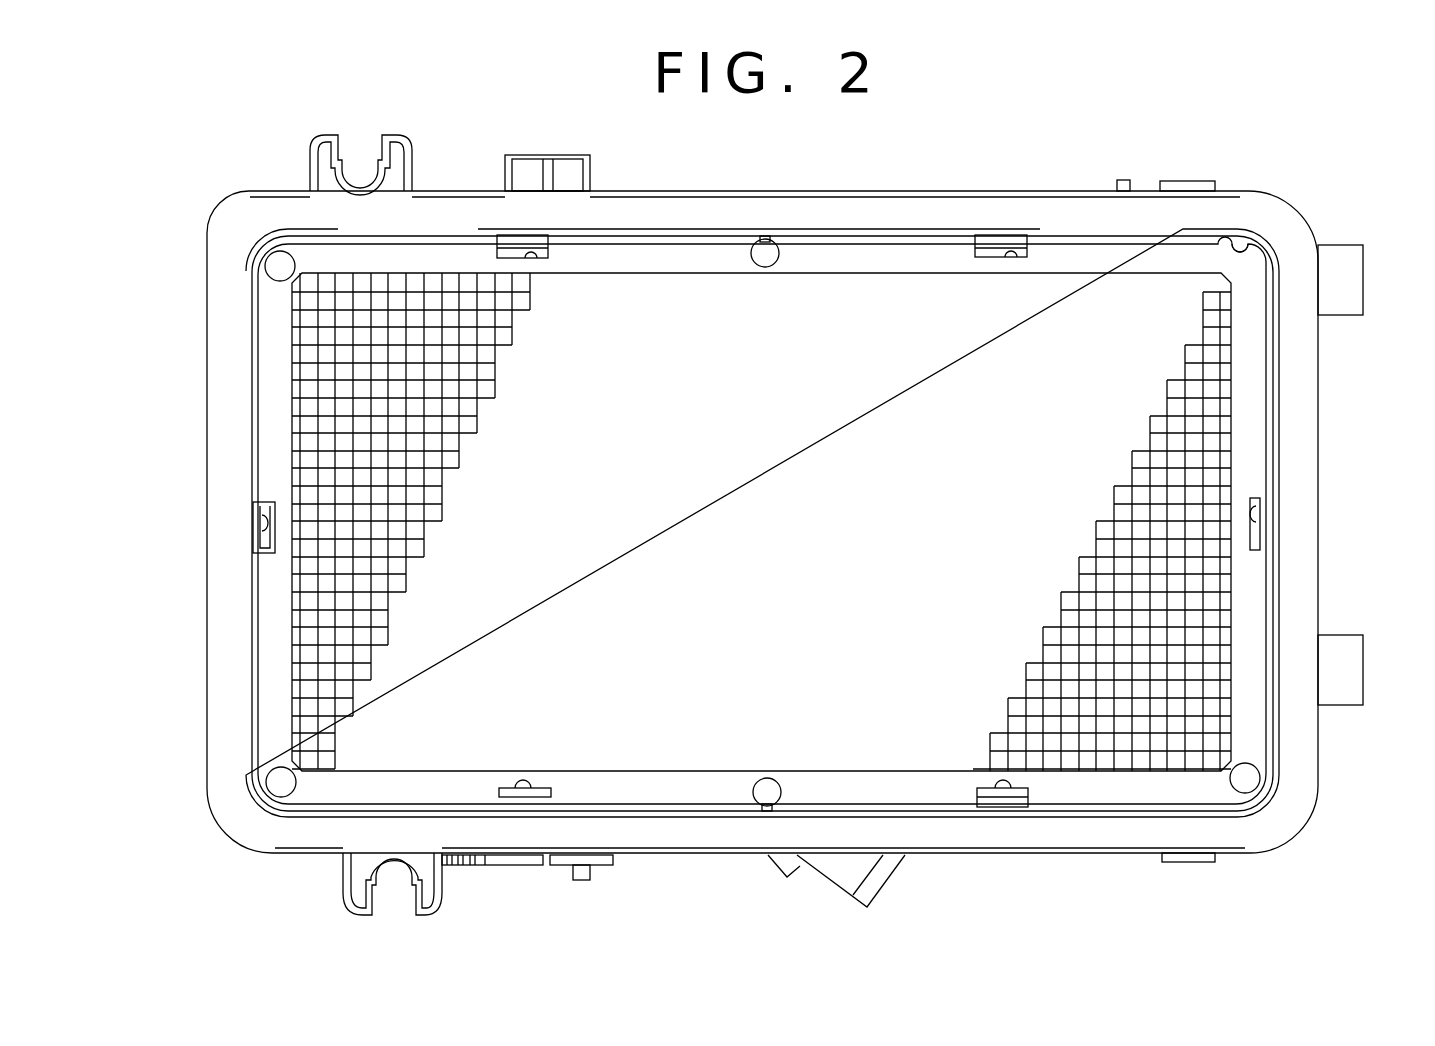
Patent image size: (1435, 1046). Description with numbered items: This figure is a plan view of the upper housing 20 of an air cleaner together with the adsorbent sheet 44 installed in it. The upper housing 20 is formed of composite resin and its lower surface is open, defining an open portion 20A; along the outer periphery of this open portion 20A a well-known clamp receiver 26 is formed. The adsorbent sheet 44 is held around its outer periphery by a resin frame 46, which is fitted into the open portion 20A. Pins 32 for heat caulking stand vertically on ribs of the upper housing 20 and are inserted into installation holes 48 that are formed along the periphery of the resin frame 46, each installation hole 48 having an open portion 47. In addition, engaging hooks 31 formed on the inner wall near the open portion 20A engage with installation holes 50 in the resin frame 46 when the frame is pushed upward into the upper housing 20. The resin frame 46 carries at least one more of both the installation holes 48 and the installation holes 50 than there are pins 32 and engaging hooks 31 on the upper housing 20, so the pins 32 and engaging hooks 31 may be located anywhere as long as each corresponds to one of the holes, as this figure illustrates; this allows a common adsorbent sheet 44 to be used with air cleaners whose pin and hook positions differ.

The upper housing 20 is at (1075, 178).
The open portion 20A is at (945, 204).
The clamp receiver 26 is at (777, 190).
The adsorbent sheet 44 is at (867, 257).
The resin frame 46 is at (1262, 432).
The open portion 47 is at (1250, 245).
The installation hole 48 is at (1220, 250).
The engaging hook 31 is at (535, 253).
The installation hole 50 is at (527, 260).
The pin 32 is at (278, 268).